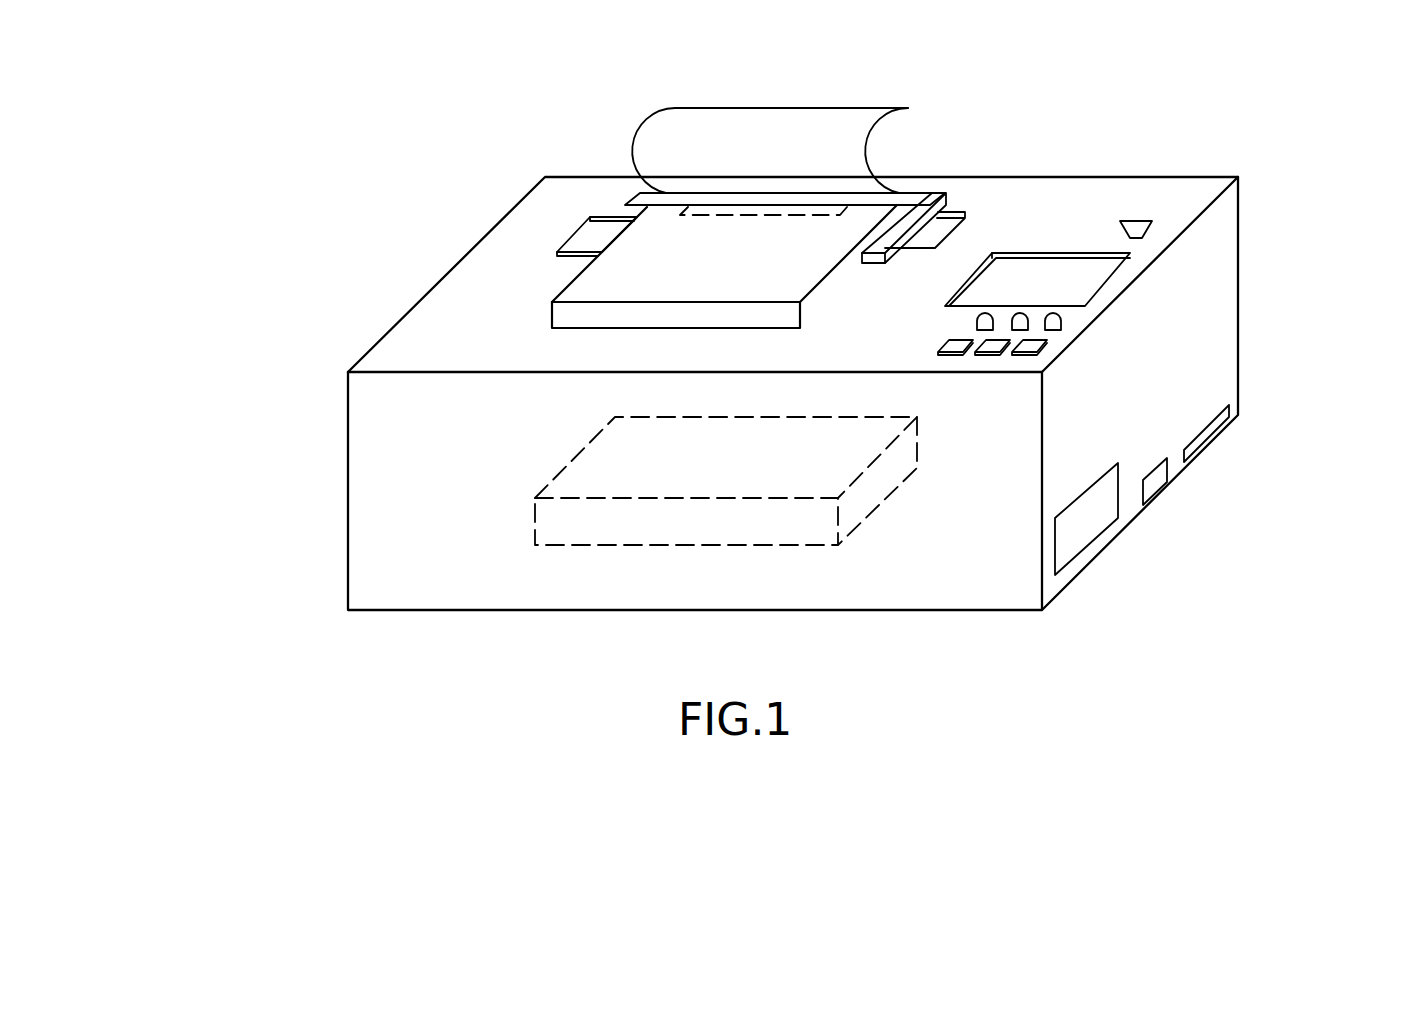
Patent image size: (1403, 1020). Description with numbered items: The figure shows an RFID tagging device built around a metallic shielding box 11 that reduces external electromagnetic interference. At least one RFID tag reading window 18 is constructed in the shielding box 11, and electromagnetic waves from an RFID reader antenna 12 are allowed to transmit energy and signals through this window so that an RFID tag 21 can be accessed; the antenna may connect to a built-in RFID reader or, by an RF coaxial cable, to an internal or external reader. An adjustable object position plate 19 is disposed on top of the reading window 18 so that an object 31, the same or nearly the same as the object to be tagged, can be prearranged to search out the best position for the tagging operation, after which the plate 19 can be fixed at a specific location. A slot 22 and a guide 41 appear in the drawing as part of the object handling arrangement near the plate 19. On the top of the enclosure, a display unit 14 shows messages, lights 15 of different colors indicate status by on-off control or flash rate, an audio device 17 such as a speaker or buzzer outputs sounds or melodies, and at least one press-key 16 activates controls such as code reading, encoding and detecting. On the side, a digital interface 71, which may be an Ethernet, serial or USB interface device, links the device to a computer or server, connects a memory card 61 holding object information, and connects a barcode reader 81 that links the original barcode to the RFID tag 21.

The shielding box 11 is at (1007, 595).
The RFID reader antenna 12 is at (595, 488).
The display unit 14 is at (1062, 250).
The lights 15 is at (1062, 323).
The press-key 16 is at (1047, 345).
The audio device 17 is at (1152, 222).
The RFID tag reading window 18 is at (947, 228).
The adjustable object position plate 19 is at (908, 222).
The RFID tag 21 is at (781, 196).
The paper outlet 22 is at (910, 200).
The object 31 is at (717, 267).
The paper guide 41 is at (710, 205).
The memory card 61 is at (1187, 458).
The digital interface 71 is at (1143, 503).
The barcode reader 81 is at (1083, 533).